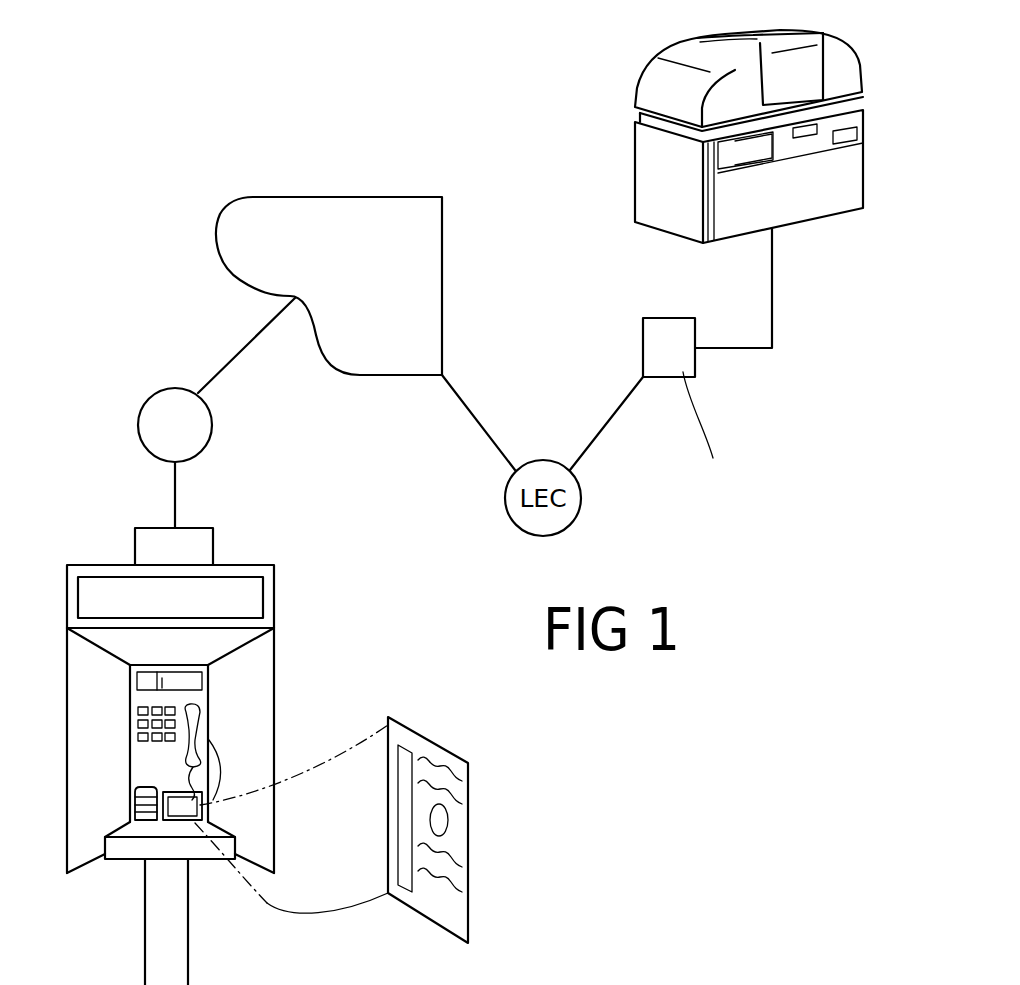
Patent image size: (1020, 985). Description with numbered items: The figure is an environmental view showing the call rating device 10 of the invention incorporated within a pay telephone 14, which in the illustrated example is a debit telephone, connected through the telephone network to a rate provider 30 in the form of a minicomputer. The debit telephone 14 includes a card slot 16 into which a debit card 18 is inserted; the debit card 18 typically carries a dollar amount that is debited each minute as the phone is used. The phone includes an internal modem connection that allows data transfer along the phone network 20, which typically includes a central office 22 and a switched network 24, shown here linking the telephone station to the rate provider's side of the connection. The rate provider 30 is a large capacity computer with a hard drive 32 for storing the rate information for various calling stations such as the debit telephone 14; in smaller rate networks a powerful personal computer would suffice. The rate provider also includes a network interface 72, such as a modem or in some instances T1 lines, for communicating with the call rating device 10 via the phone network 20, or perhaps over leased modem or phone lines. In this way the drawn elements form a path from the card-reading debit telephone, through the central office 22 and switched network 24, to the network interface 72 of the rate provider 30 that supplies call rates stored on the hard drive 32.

The call rating device 10 is at (157, 790).
The pay telephone 14 is at (274, 708).
The card slot 16 is at (173, 815).
The debit card 18 is at (468, 760).
The phone network 20 is at (168, 229).
The central office 22 is at (213, 423).
The switched network 24 is at (407, 377).
The rate provider 30 is at (688, 22).
The hard drive 32 is at (637, 84).
The network interface 72 is at (643, 335).